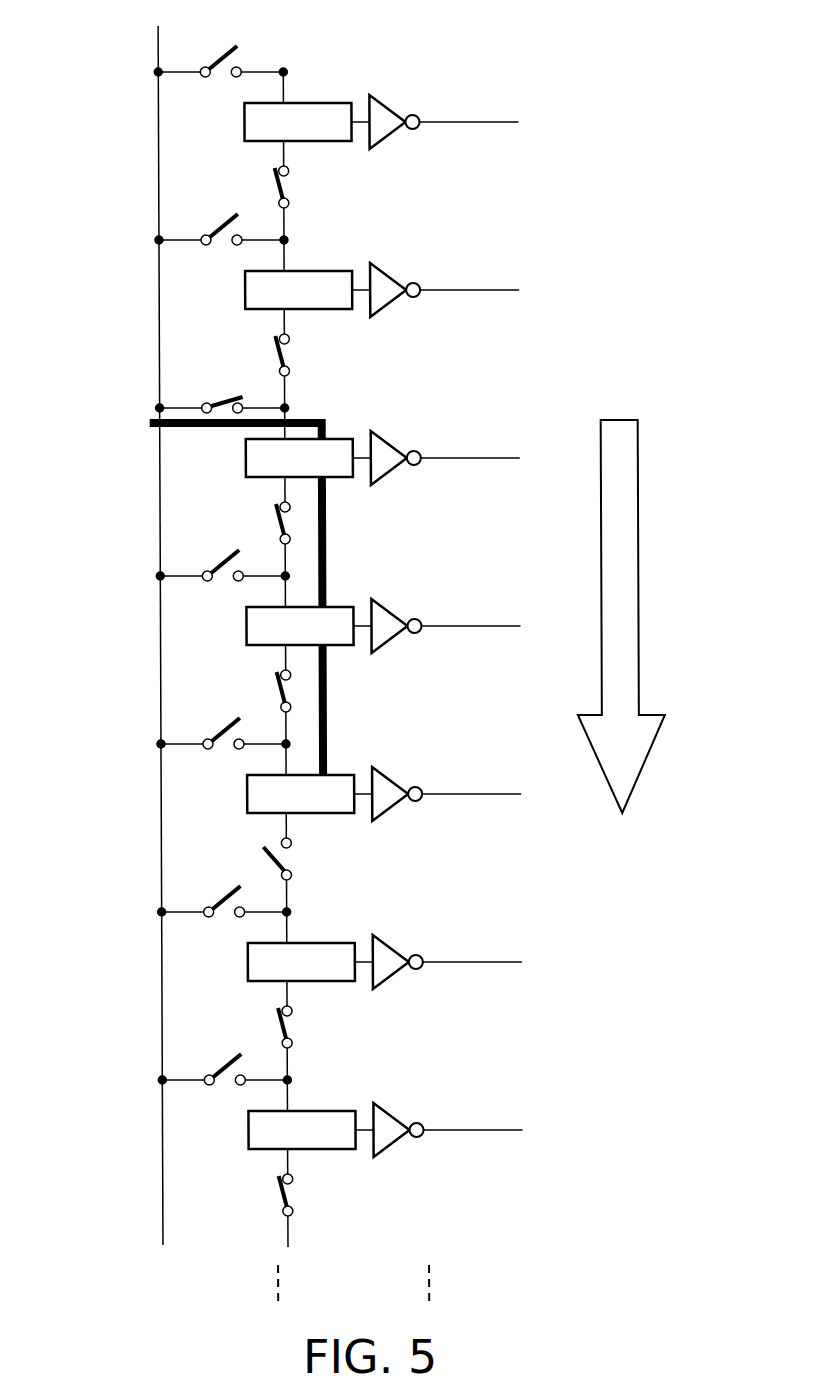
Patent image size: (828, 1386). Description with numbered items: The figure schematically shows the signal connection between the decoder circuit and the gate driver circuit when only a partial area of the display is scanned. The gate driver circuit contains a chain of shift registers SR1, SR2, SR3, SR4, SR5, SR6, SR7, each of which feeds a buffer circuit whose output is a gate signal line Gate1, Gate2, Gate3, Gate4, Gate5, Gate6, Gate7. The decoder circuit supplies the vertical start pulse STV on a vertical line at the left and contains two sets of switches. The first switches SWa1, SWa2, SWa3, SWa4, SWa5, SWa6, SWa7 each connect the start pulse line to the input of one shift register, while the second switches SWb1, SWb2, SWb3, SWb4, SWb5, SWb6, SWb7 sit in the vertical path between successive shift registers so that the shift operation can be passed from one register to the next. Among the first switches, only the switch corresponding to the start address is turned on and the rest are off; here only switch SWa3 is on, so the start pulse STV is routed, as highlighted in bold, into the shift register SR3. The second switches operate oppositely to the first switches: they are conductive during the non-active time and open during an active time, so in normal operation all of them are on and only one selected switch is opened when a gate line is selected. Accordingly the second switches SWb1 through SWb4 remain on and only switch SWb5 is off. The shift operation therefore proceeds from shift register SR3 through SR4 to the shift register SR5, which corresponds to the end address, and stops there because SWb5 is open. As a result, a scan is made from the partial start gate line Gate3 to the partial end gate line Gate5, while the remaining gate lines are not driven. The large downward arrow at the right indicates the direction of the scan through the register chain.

The vertical start pulse STV is at (163, 622).
The first switch SWa1 is at (207, 58).
The first switch SWa2 is at (207, 226).
The first switch SWa3 is at (207, 394).
The first switch SWa4 is at (207, 562).
The first switch SWa5 is at (207, 730).
The first switch SWa6 is at (207, 898).
The first switch SWa7 is at (207, 1066).
The second switch SWb1 is at (268, 188).
The second switch SWb2 is at (268, 356).
The second switch SWb3 is at (268, 524).
The second switch SWb4 is at (268, 692).
The second switch SWb5 is at (262, 860).
The second switch SWb6 is at (268, 1028).
The second switch SWb7 is at (268, 1196).
The first shift register SR1 is at (297, 122).
The shift register SR2 is at (298, 290).
The shift register SR3 is at (299, 458).
The shift register SR4 is at (299, 626).
The shift register SR5 is at (300, 794).
The shift register SR6 is at (301, 962).
The shift register SR7 is at (301, 1130).
The gate signal line Gate1 is at (434, 121).
The gate signal line Gate2 is at (435, 289).
The gate signal line Gate3 is at (436, 457).
The gate signal line Gate4 is at (436, 625).
The gate signal line Gate5 is at (437, 793).
The gate signal line Gate6 is at (438, 961).
The gate signal line Gate7 is at (438, 1129).